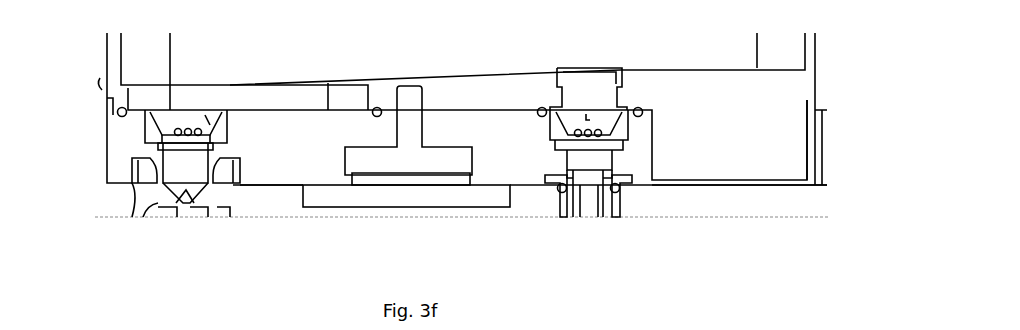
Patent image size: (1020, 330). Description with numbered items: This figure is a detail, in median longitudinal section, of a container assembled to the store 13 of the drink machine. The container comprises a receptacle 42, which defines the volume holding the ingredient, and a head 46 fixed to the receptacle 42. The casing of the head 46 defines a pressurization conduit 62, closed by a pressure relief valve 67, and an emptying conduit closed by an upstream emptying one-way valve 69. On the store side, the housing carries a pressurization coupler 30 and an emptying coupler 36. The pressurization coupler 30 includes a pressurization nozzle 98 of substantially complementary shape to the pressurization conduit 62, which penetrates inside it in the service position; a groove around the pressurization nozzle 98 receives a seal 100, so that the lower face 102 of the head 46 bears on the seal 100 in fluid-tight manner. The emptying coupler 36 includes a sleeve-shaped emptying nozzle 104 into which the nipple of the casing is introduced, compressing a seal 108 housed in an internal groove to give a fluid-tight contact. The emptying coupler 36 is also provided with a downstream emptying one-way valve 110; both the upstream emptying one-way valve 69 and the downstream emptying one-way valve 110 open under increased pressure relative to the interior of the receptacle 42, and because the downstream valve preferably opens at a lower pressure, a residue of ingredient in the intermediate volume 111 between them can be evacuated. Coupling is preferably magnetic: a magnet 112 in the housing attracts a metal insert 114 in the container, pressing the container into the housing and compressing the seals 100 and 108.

The store 13 is at (812, 200).
The pressurization coupler 30 is at (615, 195).
The emptying coupler 36 is at (137, 190).
The receptacle 42 is at (797, 88).
The head 46 is at (813, 162).
The pressurization conduit 62 is at (607, 160).
The pressure relief valve 67 is at (608, 125).
The upstream emptying one-way valve 69 is at (177, 162).
The pressurization nozzle 98 is at (575, 177).
The seal 100 is at (585, 197).
The lower face 102 is at (286, 187).
The emptying nozzle 104 is at (133, 162).
The seal 108 is at (217, 182).
The downstream emptying one-way valve 110 is at (155, 203).
The intermediate volume 111 is at (162, 147).
The magnet 112 is at (468, 193).
The metal insert 114 is at (435, 177).